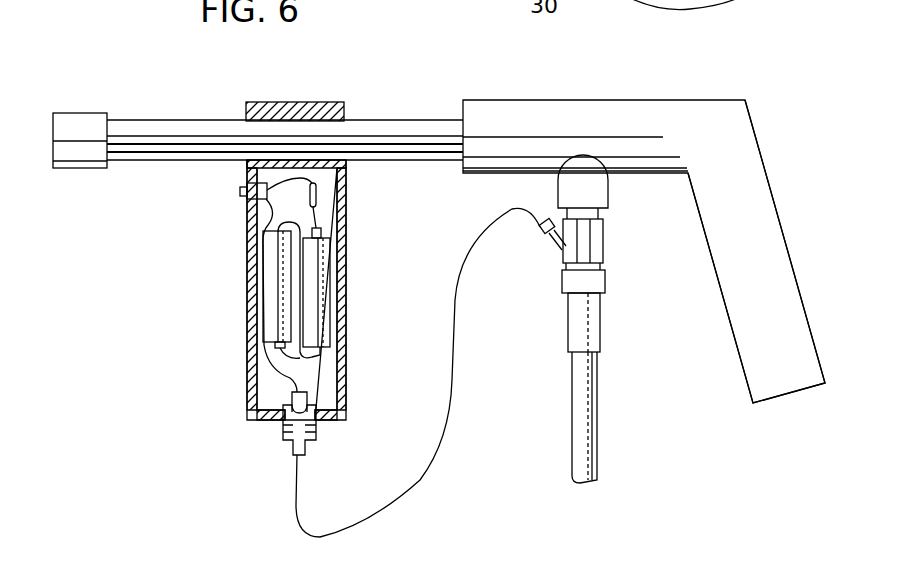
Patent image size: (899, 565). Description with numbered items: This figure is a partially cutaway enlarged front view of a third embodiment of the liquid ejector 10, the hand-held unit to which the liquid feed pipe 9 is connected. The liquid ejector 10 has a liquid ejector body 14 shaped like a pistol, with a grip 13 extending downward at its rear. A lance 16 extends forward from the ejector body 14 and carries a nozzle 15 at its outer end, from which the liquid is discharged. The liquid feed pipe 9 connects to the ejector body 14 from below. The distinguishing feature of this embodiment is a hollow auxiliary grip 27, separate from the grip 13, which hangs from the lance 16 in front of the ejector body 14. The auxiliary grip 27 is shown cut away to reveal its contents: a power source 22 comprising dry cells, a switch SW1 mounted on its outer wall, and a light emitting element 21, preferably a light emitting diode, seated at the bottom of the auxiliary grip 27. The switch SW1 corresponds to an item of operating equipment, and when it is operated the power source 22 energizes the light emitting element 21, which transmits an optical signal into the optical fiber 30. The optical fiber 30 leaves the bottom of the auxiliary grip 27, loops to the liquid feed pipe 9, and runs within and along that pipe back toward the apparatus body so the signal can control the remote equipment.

The liquid feed pipe 9 is at (597, 440).
The liquid ejector 10 is at (697, 88).
The grip 13 is at (765, 192).
The liquid ejector body 14 is at (718, 110).
The nozzle 15 is at (80, 117).
The lance 16 is at (393, 128).
The light emitting element 21 is at (307, 398).
The power source 22 is at (322, 294).
The auxiliary grip 27 is at (247, 330).
The optical fiber 30 is at (422, 477).
The switch SW1 is at (243, 192).